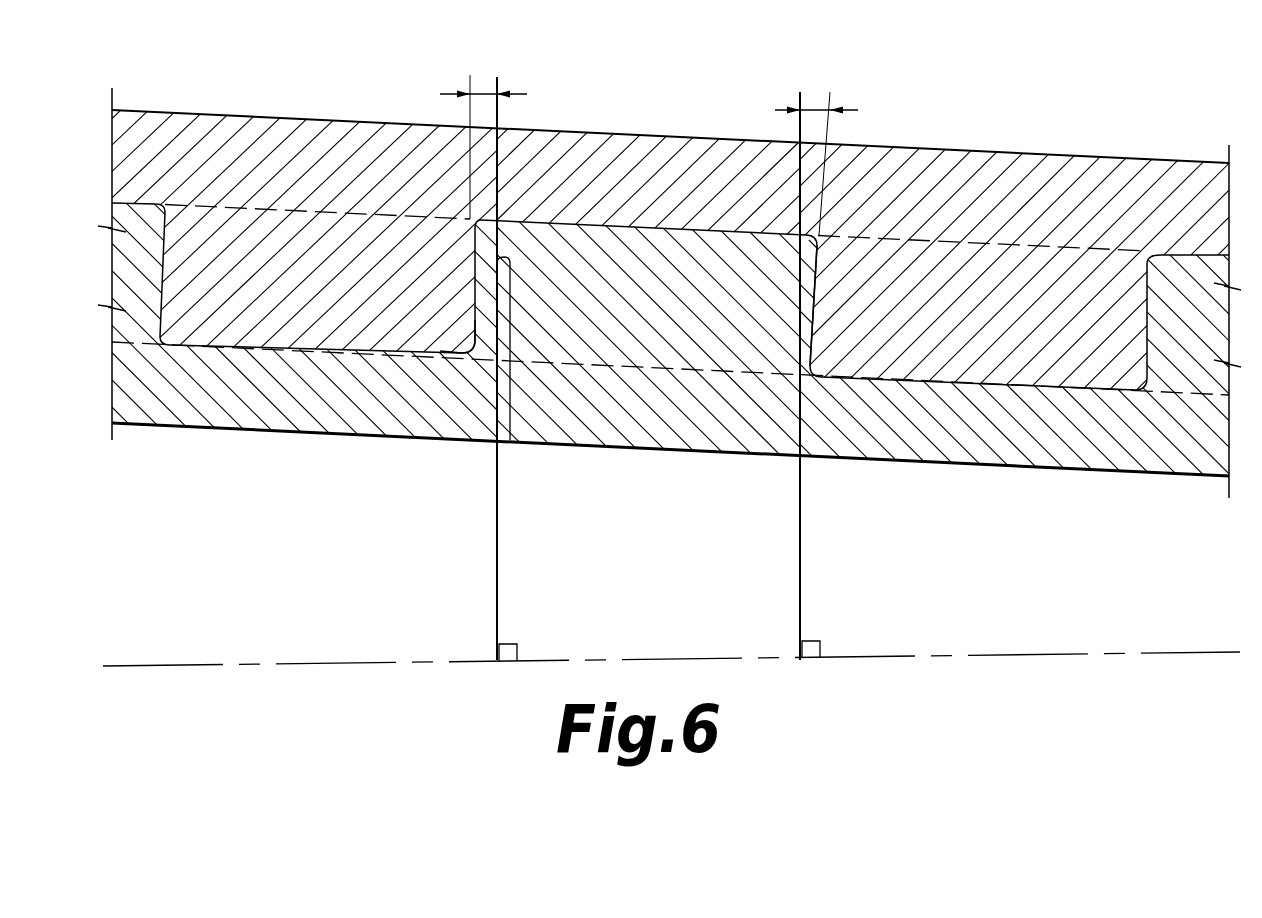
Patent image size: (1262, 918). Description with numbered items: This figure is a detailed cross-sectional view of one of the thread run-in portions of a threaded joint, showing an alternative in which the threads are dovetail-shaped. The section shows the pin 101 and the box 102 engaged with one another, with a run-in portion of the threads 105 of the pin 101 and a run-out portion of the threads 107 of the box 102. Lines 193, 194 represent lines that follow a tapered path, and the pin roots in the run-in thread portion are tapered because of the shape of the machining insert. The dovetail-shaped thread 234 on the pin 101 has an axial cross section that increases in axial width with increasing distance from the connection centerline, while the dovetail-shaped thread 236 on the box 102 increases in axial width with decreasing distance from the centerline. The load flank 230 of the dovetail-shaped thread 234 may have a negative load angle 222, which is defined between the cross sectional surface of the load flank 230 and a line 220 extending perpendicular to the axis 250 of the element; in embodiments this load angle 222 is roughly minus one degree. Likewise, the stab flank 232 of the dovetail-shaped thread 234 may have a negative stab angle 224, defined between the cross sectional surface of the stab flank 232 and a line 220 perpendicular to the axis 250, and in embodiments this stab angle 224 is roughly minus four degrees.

The pin 101 is at (171, 412).
The box 102 is at (1105, 181).
The threads of pin 105 is at (598, 345).
The threads of box 107 is at (317, 233).
The line 193 is at (201, 207).
The line 194 is at (710, 371).
The line 220 is at (797, 178).
The load angle 222 is at (483, 92).
The stab angle 224 is at (818, 108).
The load flank 230 is at (475, 315).
The stab flank 232 is at (816, 290).
The dovetail-shaped thread 234 is at (647, 254).
The dovetail-shaped thread 236 is at (300, 319).
The axis 250 is at (346, 663).